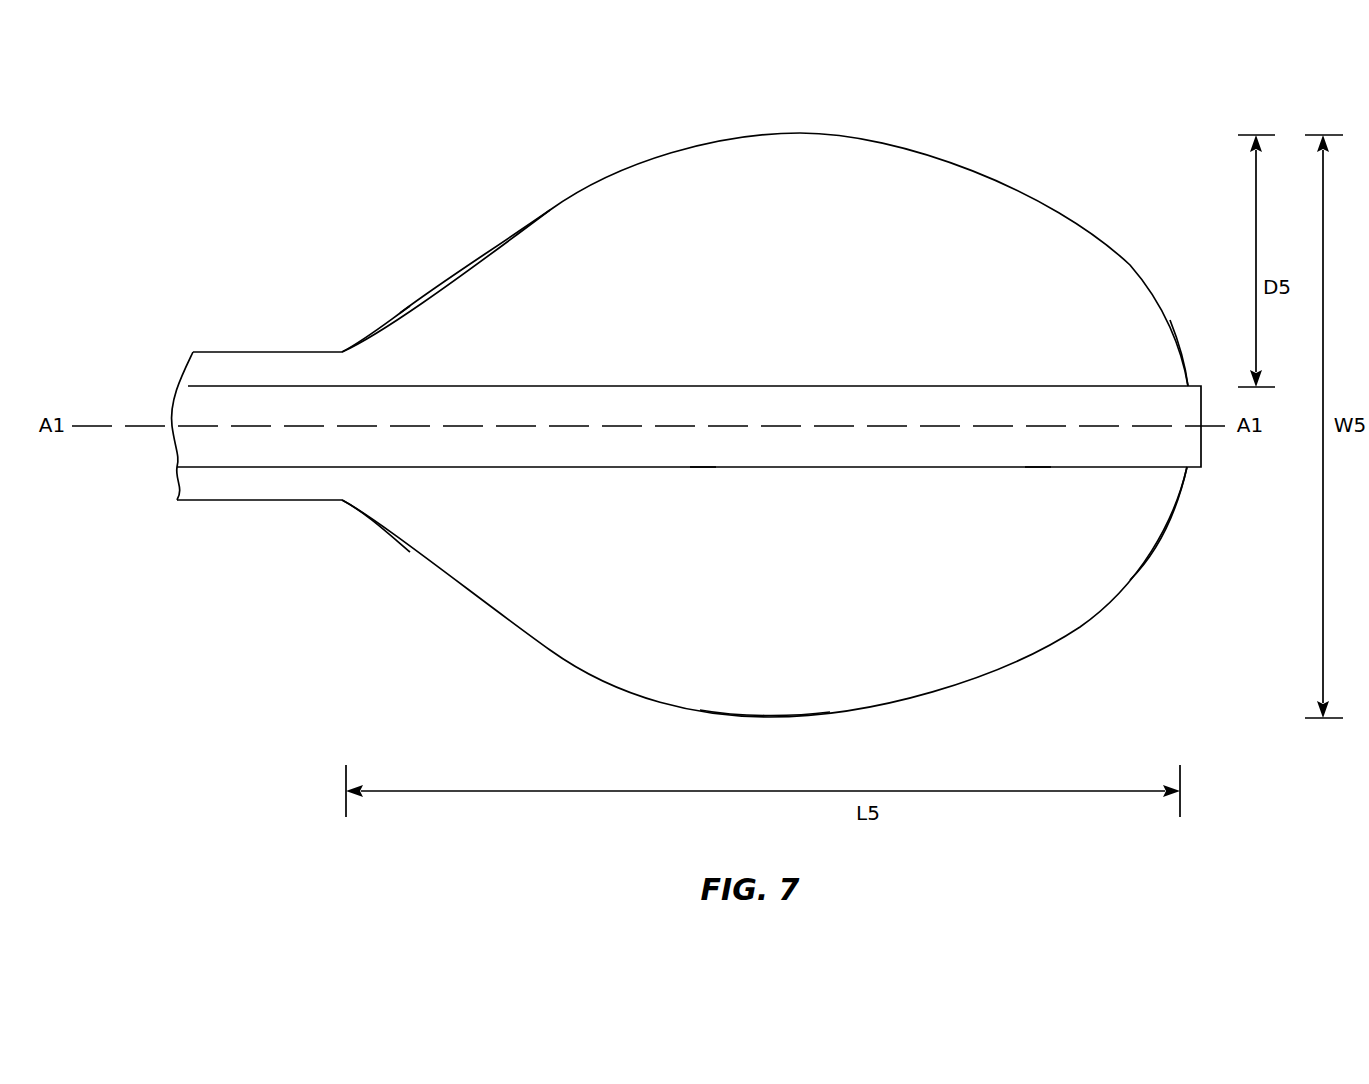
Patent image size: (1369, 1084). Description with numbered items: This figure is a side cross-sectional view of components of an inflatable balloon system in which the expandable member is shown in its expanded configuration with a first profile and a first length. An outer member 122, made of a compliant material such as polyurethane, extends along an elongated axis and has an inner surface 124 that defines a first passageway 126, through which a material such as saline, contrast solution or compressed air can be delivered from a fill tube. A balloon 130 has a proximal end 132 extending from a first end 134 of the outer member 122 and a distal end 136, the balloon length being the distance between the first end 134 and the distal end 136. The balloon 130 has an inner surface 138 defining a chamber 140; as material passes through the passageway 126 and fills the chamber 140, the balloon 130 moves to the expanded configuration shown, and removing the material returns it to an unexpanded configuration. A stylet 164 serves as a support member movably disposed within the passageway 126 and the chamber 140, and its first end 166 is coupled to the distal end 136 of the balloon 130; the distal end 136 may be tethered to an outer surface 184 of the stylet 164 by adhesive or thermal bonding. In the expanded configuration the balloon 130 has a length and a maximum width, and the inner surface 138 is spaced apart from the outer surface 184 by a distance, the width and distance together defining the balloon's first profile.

The outer member 122 is at (240, 352).
The inner surface 124 is at (230, 500).
The first passageway 126 is at (218, 369).
The balloon 130 is at (738, 702).
The proximal end 132 is at (352, 507).
The first end 134 is at (325, 350).
The distal end 136 is at (1163, 523).
The inner surface 138 is at (520, 232).
The chamber 140 is at (905, 178).
The stylet 164 is at (703, 467).
The first end 166 is at (1190, 385).
The outer surface 184 is at (1038, 467).